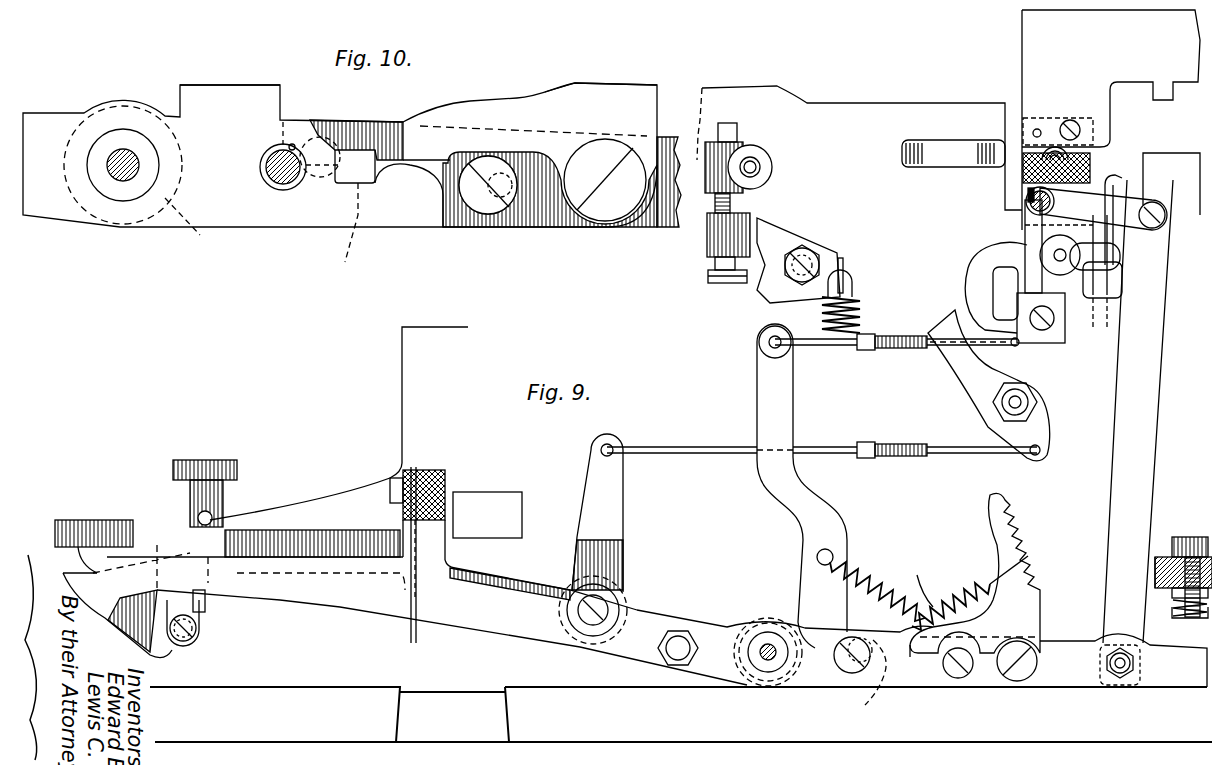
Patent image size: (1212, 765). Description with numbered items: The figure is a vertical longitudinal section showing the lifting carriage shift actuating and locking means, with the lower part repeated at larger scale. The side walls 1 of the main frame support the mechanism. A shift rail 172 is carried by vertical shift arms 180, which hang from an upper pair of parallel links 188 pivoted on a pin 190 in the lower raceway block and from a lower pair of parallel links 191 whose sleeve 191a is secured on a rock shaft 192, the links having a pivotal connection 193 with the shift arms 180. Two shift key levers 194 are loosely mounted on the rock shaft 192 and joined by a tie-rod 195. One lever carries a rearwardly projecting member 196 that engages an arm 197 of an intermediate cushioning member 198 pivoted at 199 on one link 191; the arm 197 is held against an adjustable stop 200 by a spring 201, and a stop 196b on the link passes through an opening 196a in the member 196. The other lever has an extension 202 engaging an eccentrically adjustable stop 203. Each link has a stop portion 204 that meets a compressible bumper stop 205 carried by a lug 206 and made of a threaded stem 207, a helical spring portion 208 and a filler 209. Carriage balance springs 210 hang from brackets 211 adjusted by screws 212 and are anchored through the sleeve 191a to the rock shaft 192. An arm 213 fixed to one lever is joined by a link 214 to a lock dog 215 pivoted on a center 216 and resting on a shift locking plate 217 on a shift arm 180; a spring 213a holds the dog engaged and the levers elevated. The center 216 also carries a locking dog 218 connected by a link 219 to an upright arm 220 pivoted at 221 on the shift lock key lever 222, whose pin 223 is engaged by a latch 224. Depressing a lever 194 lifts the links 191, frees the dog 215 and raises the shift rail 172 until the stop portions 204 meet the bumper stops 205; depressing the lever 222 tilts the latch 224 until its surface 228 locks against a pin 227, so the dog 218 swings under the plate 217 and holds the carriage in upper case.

In FIG. 9, the side walls 1 is at (877, 112).
In FIG. 9, the shift rail 172 is at (1122, 250).
In FIG. 9, the vertical shift arms 180 is at (1108, 487).
In FIG. 9, the upper parallel links 188 is at (1128, 216).
In FIG. 9, the pin 190 is at (1030, 205).
In FIG. 10, the lower parallel links 191 is at (392, 122).
In FIG. 9, the lower parallel links 191 is at (1058, 640).
In FIG. 10, the sleeve 191a is at (195, 232).
In FIG. 9, the sleeve 191a is at (757, 622).
In FIG. 10, the rock shaft 192 is at (130, 195).
In FIG. 9, the rock shaft 192 is at (770, 672).
In FIG. 9, the pivotal connection 193 is at (1120, 678).
In FIG. 9, the shift key levers 194 is at (330, 604).
In FIG. 9, the tie-rod 195 is at (680, 640).
In FIG. 10, the rearwardly projecting member 196 is at (415, 220).
In FIG. 9, the rearwardly projecting member 196 is at (912, 675).
In FIG. 10, the opening 196a is at (293, 146).
In FIG. 10, the stop 196b is at (276, 172).
In FIG. 10, the arm 197 is at (493, 102).
In FIG. 9, the arm 197 is at (962, 612).
In FIG. 10, the intermediate cushioning member 198 is at (625, 85).
In FIG. 9, the intermediate cushioning member 198 is at (1042, 603).
In FIG. 10, the pivot 199 is at (605, 222).
In FIG. 9, the pivot 199 is at (1017, 682).
In FIG. 10, the adjustable stop 200 is at (483, 215).
In FIG. 9, the adjustable stop 200 is at (958, 678).
In FIG. 9, the spring 201 is at (910, 578).
In FIG. 10, the extension 202 is at (348, 218).
In FIG. 9, the extension 202 is at (859, 680).
In FIG. 10, the eccentrically adjustable stop 203 is at (338, 125).
In FIG. 9, the eccentrically adjustable stop 203 is at (848, 637).
In FIG. 9, the stop portion 204 is at (1188, 680).
In FIG. 9, the bumper stop 205 is at (1185, 537).
In FIG. 9, the lug 206 is at (1155, 580).
In FIG. 9, the threaded stem 207 is at (1158, 562).
In FIG. 9, the helical spring portion 208 is at (1196, 618).
In FIG. 9, the filler 209 is at (1180, 604).
In FIG. 9, the carriage balance springs 210 is at (862, 312).
In FIG. 9, the brackets 211 is at (800, 240).
In FIG. 9, the screw 212 is at (740, 131).
In FIG. 10, the arm 213 is at (247, 88).
In FIG. 9, the arm 213 is at (793, 398).
In FIG. 9, the spring 213a is at (865, 552).
In FIG. 9, the link 214 is at (893, 352).
In FIG. 9, the lock dog 215 is at (972, 268).
In FIG. 9, the center 216 is at (1030, 402).
In FIG. 9, the shift locking plate 217 is at (995, 283).
In FIG. 9, the locking dog 218 is at (958, 358).
In FIG. 9, the link 219 is at (950, 455).
In FIG. 9, the upright arm 220 is at (623, 503).
In FIG. 9, the pivot 221 is at (617, 600).
In FIG. 9, the shift lock key lever 222 is at (340, 545).
In FIG. 9, the pin 223 is at (212, 516).
In FIG. 9, the latch 224 is at (187, 520).
In FIG. 9, the pin 227 is at (196, 638).
In FIG. 9, the surface 228 is at (208, 603).